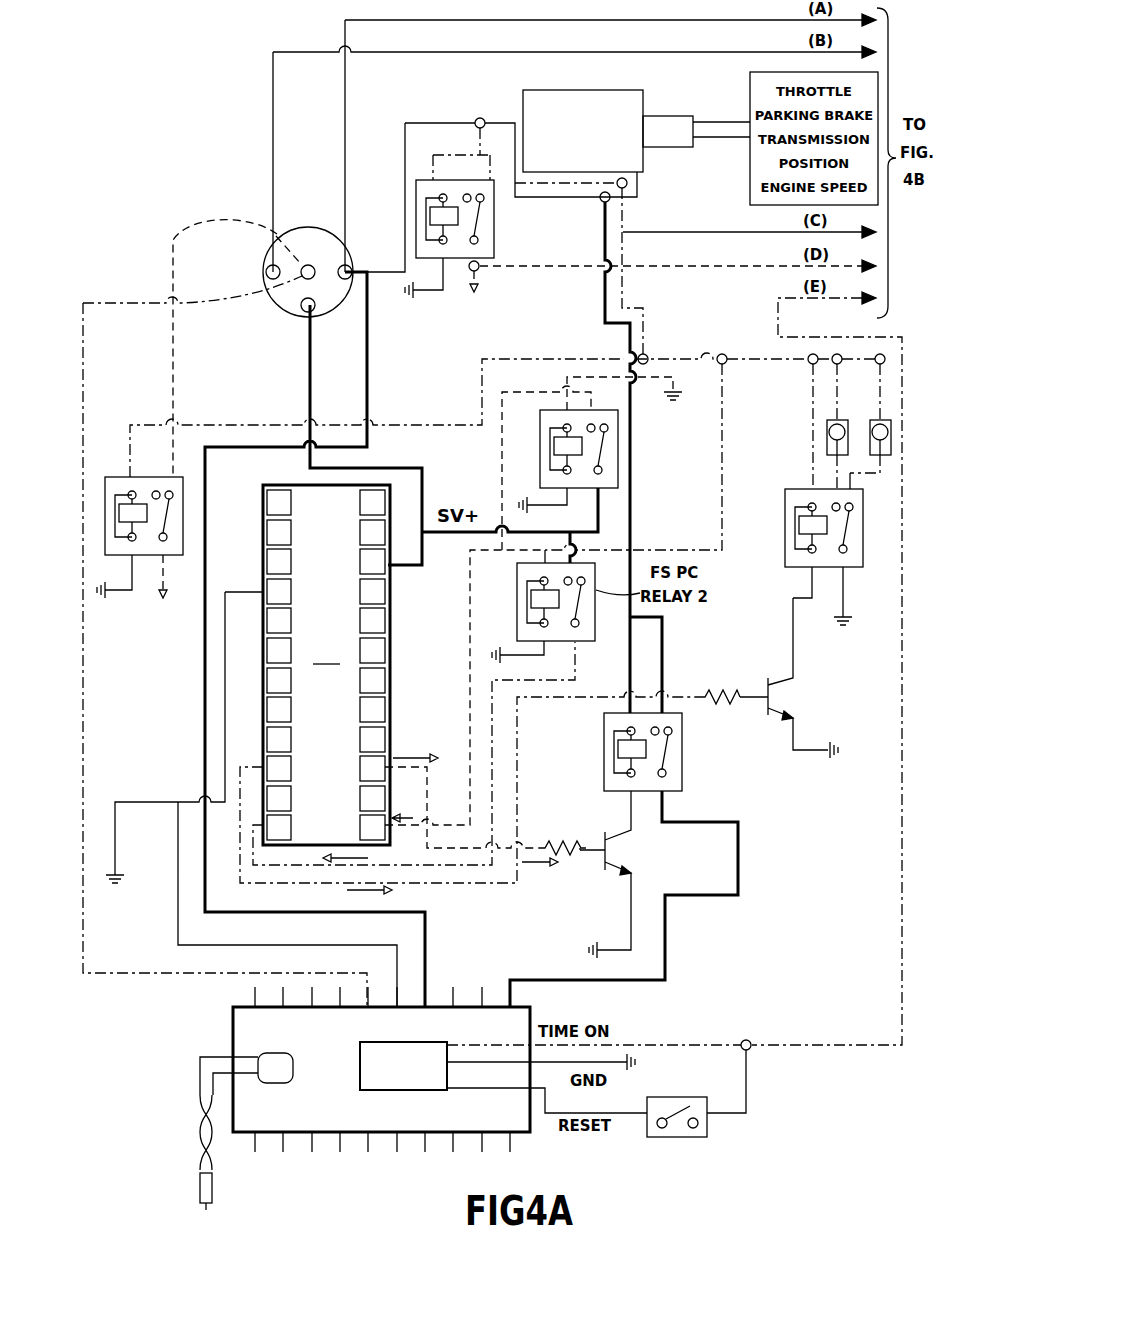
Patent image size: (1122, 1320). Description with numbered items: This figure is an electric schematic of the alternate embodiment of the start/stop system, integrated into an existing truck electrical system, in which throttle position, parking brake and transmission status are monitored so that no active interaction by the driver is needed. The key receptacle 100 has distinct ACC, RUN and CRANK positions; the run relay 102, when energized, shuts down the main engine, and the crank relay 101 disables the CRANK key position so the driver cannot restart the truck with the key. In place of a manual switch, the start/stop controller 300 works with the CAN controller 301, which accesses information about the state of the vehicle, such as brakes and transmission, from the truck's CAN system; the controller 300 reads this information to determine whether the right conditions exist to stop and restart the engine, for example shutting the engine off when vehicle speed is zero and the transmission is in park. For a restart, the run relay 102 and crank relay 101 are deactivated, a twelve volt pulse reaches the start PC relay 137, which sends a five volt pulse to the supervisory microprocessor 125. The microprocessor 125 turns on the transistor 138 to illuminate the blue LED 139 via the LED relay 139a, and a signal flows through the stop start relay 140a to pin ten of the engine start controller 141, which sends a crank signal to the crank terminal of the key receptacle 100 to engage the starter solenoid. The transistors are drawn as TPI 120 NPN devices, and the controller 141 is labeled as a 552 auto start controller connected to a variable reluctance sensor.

The key receptacle 100 is at (335, 228).
The crank relay 101 is at (125, 477).
The run relay 102 is at (512, 246).
The supervisory microprocessor 125 is at (326, 665).
The start PC relay 137 is at (610, 432).
The transistor 138 is at (770, 662).
The blue LED 139 is at (819, 421).
The LED relay 139a is at (800, 540).
The stop start relay 140a is at (682, 748).
The engine start controller 141 is at (233, 1030).
The start/stop controller 300 is at (523, 105).
The CAN controller 301 is at (677, 132).
The auto start controller 552 is at (187, 1139).
The TPI 120 NPN transistor 120 is at (638, 874).